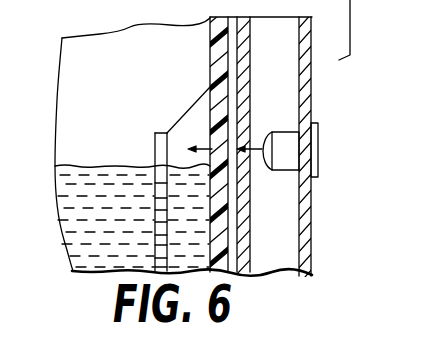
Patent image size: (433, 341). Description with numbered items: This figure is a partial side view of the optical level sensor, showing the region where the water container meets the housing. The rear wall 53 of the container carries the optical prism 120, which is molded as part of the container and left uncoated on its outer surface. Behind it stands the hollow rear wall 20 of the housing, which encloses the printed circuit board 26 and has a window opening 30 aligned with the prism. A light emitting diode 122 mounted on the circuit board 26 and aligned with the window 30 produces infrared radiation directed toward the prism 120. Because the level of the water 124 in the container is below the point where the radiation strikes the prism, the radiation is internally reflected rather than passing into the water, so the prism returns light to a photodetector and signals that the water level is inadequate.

The hollow rear wall 20 is at (245, 50).
The printed circuit board 26 is at (304, 88).
The window opening 30 is at (243, 128).
The rear wall of the container 53 is at (214, 33).
The optical prism 120 is at (183, 126).
The light emitting diode 122 is at (283, 153).
The water 124 is at (83, 250).